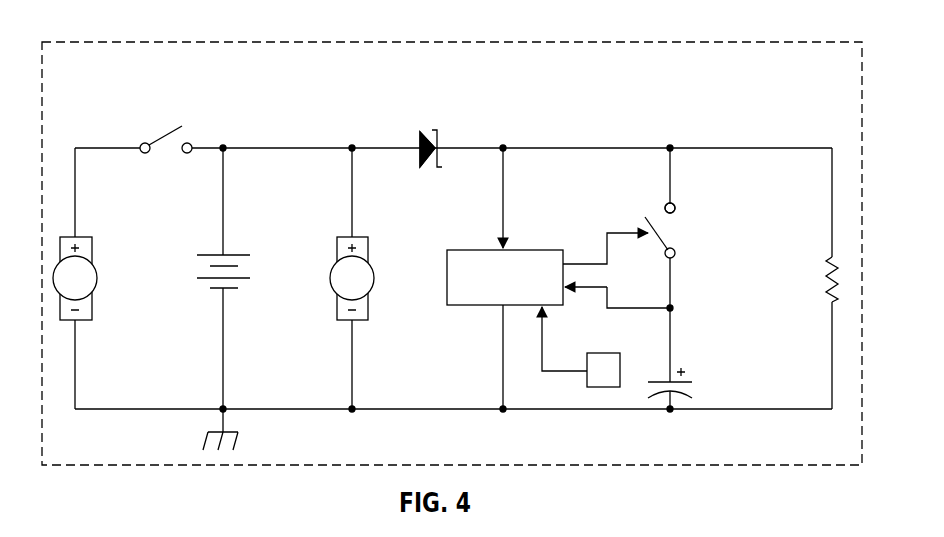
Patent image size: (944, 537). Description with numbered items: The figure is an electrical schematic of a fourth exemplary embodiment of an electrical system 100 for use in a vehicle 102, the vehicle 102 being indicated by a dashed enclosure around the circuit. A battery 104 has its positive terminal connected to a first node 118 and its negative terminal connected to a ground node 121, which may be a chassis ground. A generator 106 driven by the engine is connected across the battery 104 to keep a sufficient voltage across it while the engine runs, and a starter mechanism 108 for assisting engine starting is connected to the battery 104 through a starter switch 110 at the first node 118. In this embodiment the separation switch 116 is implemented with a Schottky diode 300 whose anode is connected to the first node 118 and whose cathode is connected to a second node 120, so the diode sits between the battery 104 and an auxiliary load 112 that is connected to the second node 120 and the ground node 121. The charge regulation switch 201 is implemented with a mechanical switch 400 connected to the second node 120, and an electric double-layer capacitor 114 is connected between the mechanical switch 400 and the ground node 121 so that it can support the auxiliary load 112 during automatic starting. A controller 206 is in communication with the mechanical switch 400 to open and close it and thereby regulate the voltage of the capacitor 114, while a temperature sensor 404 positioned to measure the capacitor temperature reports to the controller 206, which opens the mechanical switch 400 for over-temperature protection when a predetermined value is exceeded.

The electrical system 100 is at (760, 94).
The vehicle 102 is at (102, 42).
The battery 104 is at (235, 255).
The generator 106 is at (330, 278).
The starter mechanism 108 is at (97, 277).
The starter switch 110 is at (165, 132).
The auxiliary load 112 is at (826, 285).
The electric double-layer capacitor 114 is at (660, 382).
The separation switch 116 is at (447, 126).
The first node 118 is at (305, 147).
The second node 120 is at (672, 146).
The ground node 121 is at (412, 410).
The charge regulation switch 201 is at (690, 202).
The controller 206 is at (465, 307).
The Schottky diode 300 is at (426, 168).
The mechanical switch 400 is at (660, 238).
The temperature sensor 404 is at (603, 387).